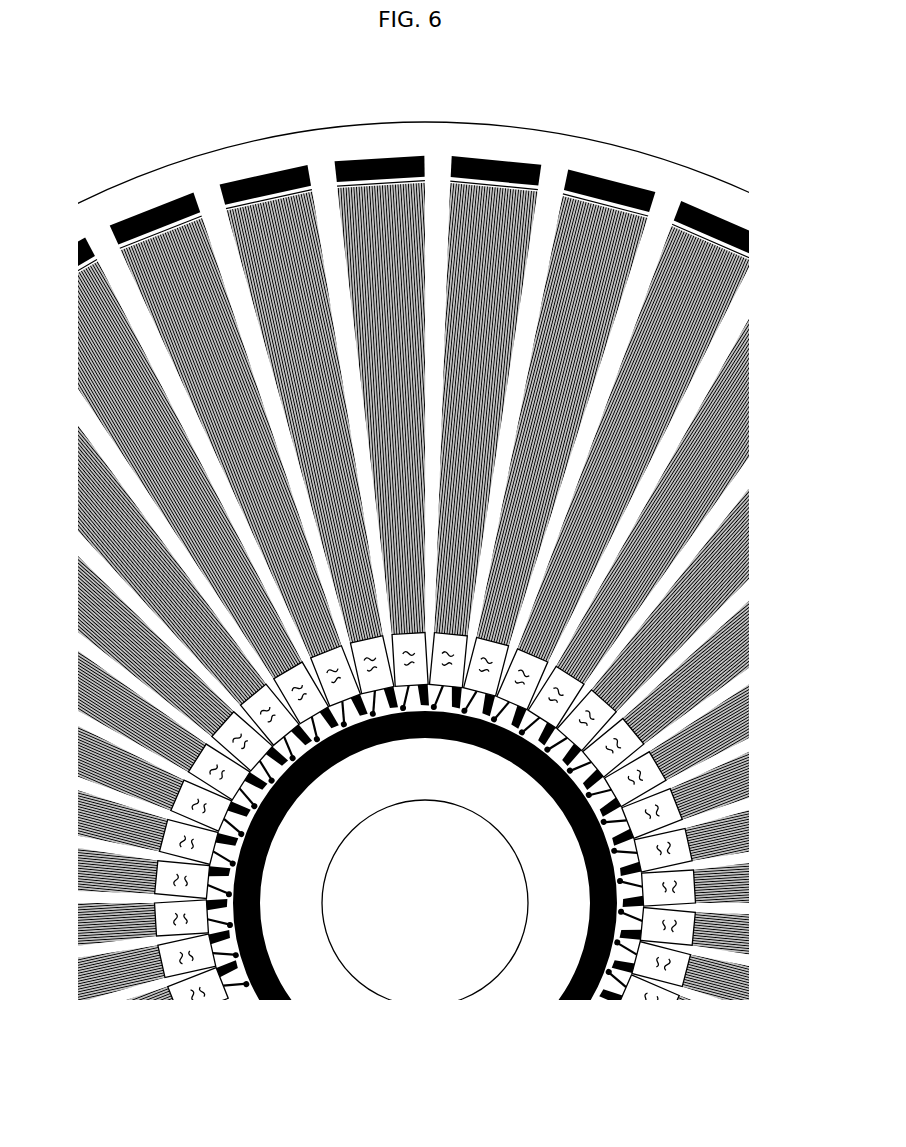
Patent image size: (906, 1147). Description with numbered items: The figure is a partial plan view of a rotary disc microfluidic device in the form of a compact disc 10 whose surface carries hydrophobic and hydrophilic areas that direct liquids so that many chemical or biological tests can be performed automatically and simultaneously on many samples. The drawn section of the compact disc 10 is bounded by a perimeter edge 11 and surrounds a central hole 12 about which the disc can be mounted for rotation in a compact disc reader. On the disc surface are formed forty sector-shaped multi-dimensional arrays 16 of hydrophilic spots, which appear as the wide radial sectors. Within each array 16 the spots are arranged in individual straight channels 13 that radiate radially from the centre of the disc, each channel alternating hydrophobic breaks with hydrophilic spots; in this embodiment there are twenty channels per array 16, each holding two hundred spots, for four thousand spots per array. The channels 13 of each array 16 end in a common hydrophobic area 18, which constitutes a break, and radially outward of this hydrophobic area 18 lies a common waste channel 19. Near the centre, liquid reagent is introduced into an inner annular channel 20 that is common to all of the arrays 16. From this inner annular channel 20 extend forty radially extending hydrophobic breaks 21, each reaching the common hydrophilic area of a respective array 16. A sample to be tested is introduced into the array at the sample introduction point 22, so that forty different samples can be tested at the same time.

The compact disc 10 is at (453, 607).
The perimeter edge 11 is at (441, 119).
The central hole 12 is at (380, 805).
The straight channels 13 is at (304, 224).
The sector-shaped multi-dimensional arrays 16 is at (110, 266).
The common hydrophobic area 18 is at (429, 179).
The common waste channel 19 is at (246, 173).
The inner annular channel 20 is at (279, 833).
The radially extending hydrophobic breaks 21 is at (323, 775).
The sample introduction point 22 is at (353, 752).